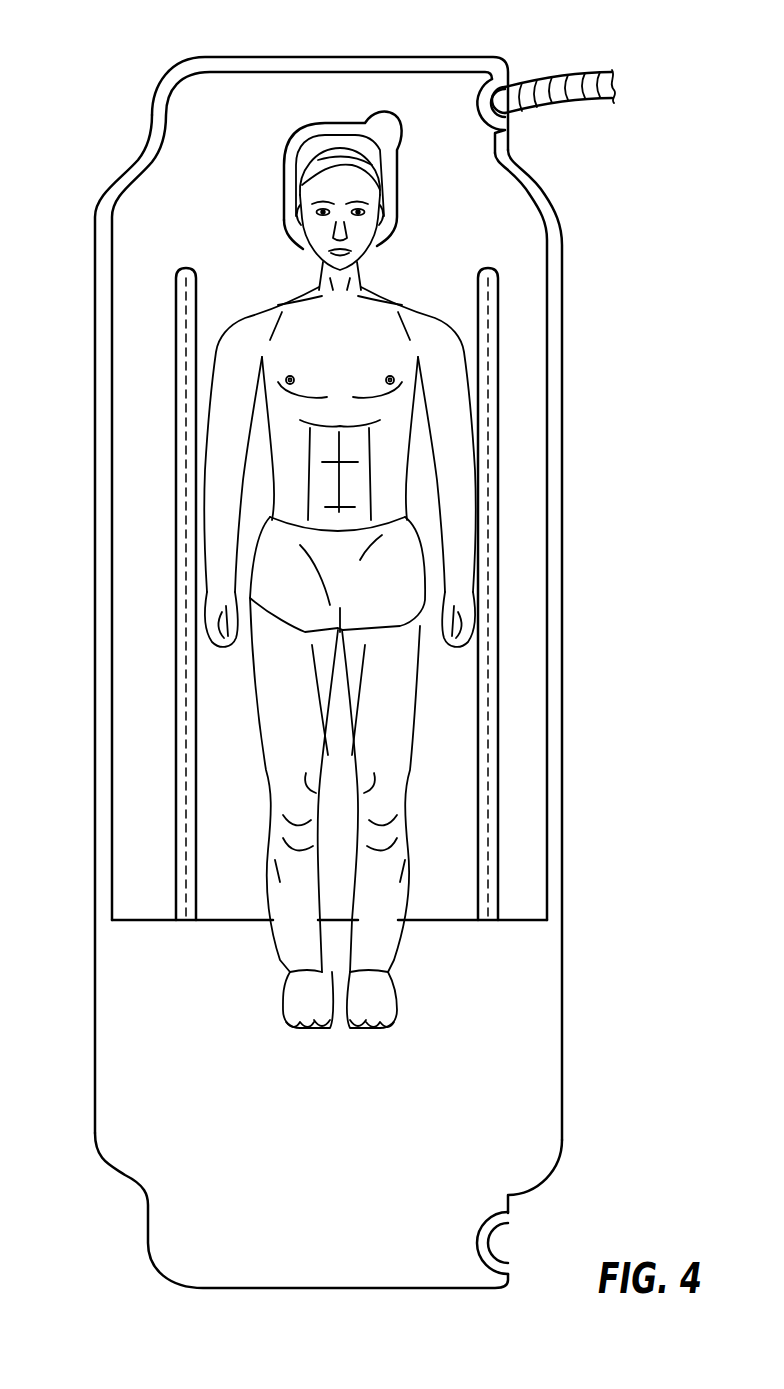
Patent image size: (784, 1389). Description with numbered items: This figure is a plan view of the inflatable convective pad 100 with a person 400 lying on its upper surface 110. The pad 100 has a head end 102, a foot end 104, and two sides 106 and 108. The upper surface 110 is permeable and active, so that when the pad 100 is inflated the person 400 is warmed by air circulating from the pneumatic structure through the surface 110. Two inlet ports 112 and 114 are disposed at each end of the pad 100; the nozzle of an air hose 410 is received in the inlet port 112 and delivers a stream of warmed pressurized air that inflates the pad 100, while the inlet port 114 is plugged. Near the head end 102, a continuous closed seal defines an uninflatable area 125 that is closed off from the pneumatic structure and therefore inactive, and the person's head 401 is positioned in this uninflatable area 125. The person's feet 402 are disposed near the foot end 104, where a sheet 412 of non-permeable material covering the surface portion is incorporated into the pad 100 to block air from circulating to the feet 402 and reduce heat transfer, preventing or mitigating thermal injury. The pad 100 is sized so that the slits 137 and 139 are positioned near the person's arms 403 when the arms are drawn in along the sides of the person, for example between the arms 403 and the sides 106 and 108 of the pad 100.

The inflatable convective pad 100 is at (357, 665).
The head end 102 is at (443, 57).
The foot end 104 is at (465, 1288).
The side 106 is at (96, 580).
The side 108 is at (562, 452).
The upper surface 110 is at (515, 562).
The inlet port 112 is at (500, 128).
The inlet port 114 is at (498, 1218).
The uninflatable area 125 is at (297, 157).
The slit 137 is at (185, 330).
The slit 139 is at (488, 305).
The person 400 is at (323, 641).
The head 401 is at (356, 143).
The feet 402 is at (336, 1042).
The arms 403 is at (232, 405).
The air hose 410 is at (597, 83).
The sheet of non-permeable material 412 is at (530, 998).